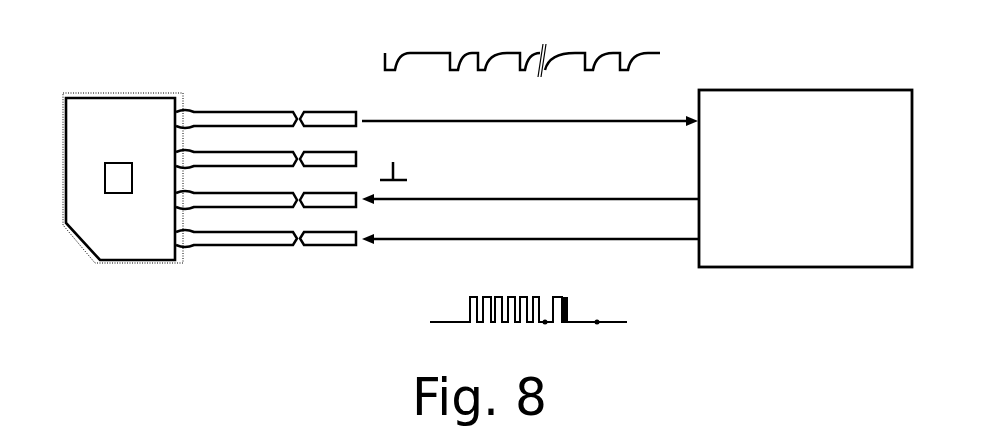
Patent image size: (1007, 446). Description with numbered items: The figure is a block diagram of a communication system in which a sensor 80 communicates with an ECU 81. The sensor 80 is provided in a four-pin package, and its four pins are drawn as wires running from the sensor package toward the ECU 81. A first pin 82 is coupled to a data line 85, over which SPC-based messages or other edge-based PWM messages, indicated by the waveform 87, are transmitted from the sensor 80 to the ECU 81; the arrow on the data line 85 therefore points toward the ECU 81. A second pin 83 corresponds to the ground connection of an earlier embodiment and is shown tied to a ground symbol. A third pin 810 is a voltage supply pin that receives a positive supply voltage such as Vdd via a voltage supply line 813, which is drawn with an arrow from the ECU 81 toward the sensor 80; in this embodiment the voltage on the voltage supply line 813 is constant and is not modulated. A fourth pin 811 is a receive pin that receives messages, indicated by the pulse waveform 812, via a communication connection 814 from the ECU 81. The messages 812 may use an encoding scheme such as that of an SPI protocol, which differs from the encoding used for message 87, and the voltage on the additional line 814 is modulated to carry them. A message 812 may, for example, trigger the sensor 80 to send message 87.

The sensor 80 is at (128, 95).
The ECU 81 is at (763, 90).
The pin 82 is at (228, 111).
The pin 83 is at (355, 153).
The data line 85 is at (643, 121).
The message 87 is at (577, 53).
The voltage supply pin 810 is at (340, 205).
The receive pin 811 is at (245, 232).
The message 812 is at (570, 309).
The voltage supply line 813 is at (493, 199).
The communication connection 814 is at (501, 239).